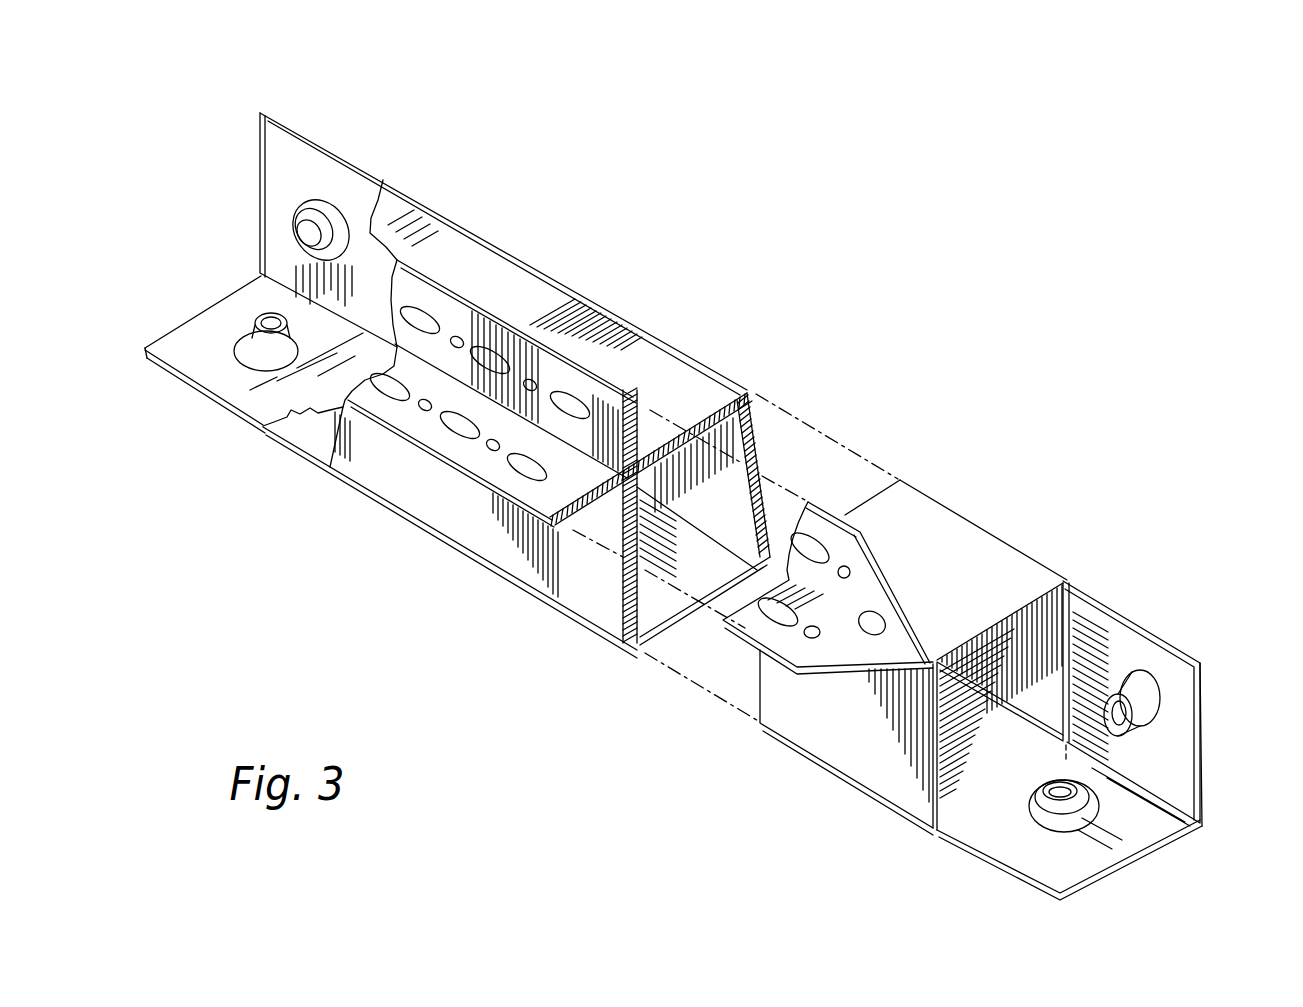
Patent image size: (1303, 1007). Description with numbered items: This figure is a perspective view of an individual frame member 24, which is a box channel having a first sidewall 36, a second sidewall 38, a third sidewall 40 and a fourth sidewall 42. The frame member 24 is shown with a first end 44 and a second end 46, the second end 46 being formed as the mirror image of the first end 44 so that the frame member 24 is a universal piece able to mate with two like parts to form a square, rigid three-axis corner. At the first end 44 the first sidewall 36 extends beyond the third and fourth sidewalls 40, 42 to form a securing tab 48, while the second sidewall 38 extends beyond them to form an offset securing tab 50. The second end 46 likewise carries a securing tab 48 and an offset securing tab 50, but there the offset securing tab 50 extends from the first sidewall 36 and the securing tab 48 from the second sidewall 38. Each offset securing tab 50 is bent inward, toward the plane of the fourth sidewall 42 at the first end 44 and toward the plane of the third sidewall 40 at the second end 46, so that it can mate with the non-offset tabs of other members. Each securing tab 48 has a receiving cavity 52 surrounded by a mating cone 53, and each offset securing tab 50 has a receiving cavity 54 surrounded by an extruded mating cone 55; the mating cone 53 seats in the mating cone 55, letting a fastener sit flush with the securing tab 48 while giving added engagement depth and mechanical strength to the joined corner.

The frame member 24 is at (750, 378).
The first sidewall 36 is at (963, 752).
The second sidewall 38 is at (1040, 622).
The third sidewall 40 is at (928, 592).
The fourth sidewall 42 is at (837, 732).
The first end 44 is at (1217, 743).
The second end 46 is at (234, 224).
The securing tab 48 is at (290, 142).
The offset securing tab 50 is at (197, 347).
The receiving cavity 52 is at (327, 220).
The mating cone 53 is at (312, 222).
The receiving cavity 54 is at (263, 320).
The mating cone 55 is at (262, 352).